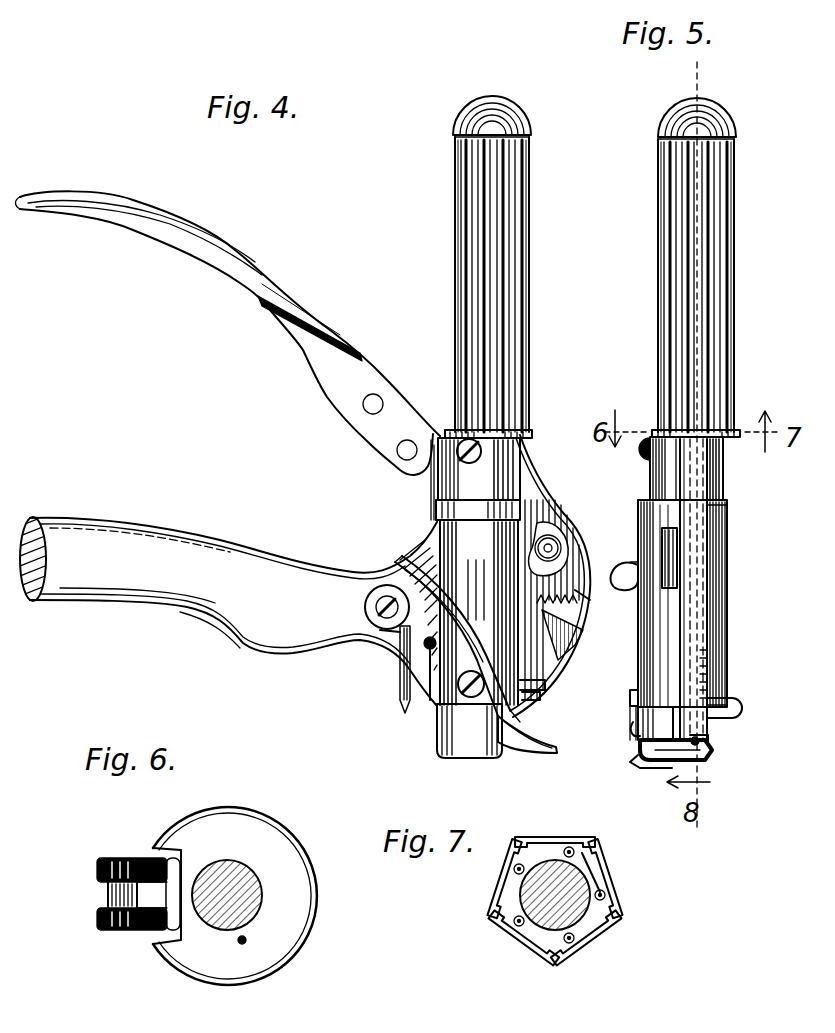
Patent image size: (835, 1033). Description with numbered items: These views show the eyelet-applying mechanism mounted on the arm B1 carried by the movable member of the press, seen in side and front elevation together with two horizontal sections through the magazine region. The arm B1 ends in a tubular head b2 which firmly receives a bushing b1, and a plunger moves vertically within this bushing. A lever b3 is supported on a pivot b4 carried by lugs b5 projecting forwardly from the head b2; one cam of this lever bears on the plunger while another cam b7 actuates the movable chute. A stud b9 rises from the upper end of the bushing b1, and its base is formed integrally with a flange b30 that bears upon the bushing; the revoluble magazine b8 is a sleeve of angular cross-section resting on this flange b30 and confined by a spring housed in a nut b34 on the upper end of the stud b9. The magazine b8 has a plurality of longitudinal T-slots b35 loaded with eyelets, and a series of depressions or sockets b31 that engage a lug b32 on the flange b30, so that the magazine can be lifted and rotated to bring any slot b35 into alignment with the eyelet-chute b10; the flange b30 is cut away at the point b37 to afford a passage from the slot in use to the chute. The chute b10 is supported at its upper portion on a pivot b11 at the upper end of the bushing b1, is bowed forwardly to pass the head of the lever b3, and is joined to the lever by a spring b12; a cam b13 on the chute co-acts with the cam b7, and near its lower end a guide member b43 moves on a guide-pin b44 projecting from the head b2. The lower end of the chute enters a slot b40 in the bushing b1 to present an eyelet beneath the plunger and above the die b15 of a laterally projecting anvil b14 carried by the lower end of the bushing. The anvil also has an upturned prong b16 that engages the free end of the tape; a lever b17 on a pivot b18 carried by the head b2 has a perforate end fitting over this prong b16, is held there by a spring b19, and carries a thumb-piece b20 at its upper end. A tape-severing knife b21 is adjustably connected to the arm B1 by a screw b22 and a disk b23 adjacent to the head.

In FIG. 4, the lever b3 is at (262, 308).
In FIG. 4, the arm B1 is at (223, 608).
In FIG. 4, the nut b34 is at (523, 113).
In FIG. 5, the nut b34 is at (735, 116).
In FIG. 4, the revoluble magazine b8 is at (505, 284).
In FIG. 5, the revoluble magazine b8 is at (711, 285).
In FIG. 7, the revoluble magazine b8 is at (545, 877).
In FIG. 4, the longitudinal T-slots b35 is at (500, 178).
In FIG. 5, the longitudinal T-slots b35 is at (700, 186).
In FIG. 7, the longitudinal T-slots b35 is at (542, 846).
In FIG. 4, the flange b30 is at (445, 430).
In FIG. 5, the flange b30 is at (696, 433).
In FIG. 6, the flange b30 is at (318, 928).
In FIG. 4, the pivot b11 is at (518, 450).
In FIG. 5, the pivot b11 is at (644, 449).
In FIG. 4, the bushing b1 is at (475, 479).
In FIG. 5, the bushing b1 is at (655, 484).
In FIG. 4, the tubular head b2 is at (479, 612).
In FIG. 5, the tubular head b2 is at (727, 622).
In FIG. 4, the lugs b5 is at (557, 512).
In FIG. 5, the lugs b5 is at (722, 538).
In FIG. 4, the eyelet-chute b10 is at (540, 530).
In FIG. 5, the eyelet-chute b10 is at (708, 482).
In FIG. 6, the eyelet-chute b10 is at (112, 932).
In FIG. 4, the pivot b4 is at (557, 548).
In FIG. 5, the pivot b4 is at (662, 551).
In FIG. 4, the spring b12 is at (567, 590).
In FIG. 4, the cam b13 is at (560, 632).
In FIG. 4, the guide member b43 is at (516, 718).
In FIG. 4, the guide-pin b44 is at (532, 680).
In FIG. 4, the thumb-piece b20 is at (392, 565).
In FIG. 5, the thumb-piece b20 is at (623, 591).
In FIG. 4, the cam b7 is at (482, 612).
In FIG. 4, the prong b16 is at (512, 760).
In FIG. 5, the prong b16 is at (650, 724).
In FIG. 4, the disk b23 is at (385, 612).
In FIG. 4, the screw b22 is at (352, 641).
In FIG. 4, the tape-severing knife b21 is at (398, 690).
In FIG. 5, the tape-severing knife b21 is at (736, 702).
In FIG. 4, the pivot b18 is at (436, 698).
In FIG. 5, the pivot b18 is at (635, 700).
In FIG. 4, the spring b19 is at (469, 731).
In FIG. 5, the spring b19 is at (632, 732).
In FIG. 5, the die b15 is at (693, 727).
In FIG. 5, the anvil b14 is at (712, 752).
In FIG. 5, the lever b17 is at (667, 754).
In FIG. 5, the slot b40 is at (692, 738).
In FIG. 6, the cut-away point b37 is at (158, 850).
In FIG. 6, the stud b9 is at (238, 870).
In FIG. 7, the stud b9 is at (552, 917).
In FIG. 6, the lug b32 is at (248, 942).
In FIG. 7, the depressions or sockets b31 is at (600, 885).